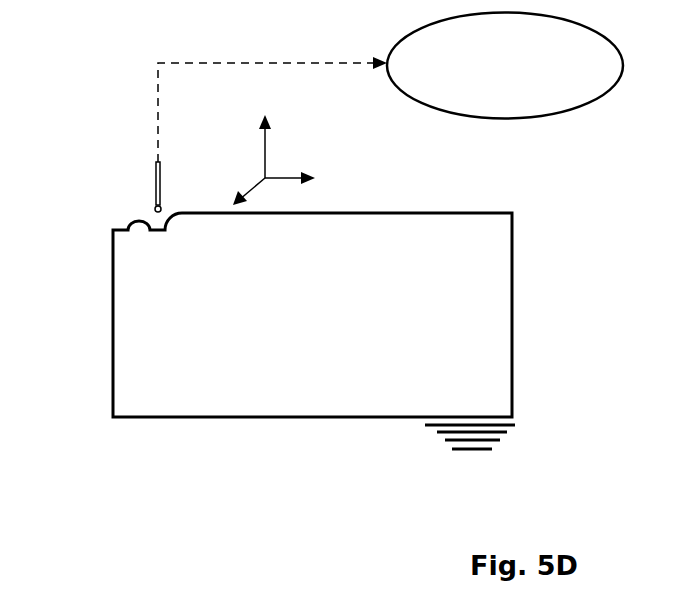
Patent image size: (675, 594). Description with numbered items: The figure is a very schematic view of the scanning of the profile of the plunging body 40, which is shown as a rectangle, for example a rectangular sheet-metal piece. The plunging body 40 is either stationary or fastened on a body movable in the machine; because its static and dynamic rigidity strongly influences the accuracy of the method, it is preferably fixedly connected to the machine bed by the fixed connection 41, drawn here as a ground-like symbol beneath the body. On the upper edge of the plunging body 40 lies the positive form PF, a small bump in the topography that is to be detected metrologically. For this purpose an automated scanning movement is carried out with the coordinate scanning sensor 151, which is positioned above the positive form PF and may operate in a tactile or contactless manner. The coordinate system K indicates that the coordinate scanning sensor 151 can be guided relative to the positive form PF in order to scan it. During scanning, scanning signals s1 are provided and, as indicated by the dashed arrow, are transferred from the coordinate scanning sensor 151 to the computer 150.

The plunging body 40 is at (432, 282).
The fixed connection 41 is at (400, 441).
The computer 150 is at (530, 72).
The coordinate scanning sensor 151 is at (160, 177).
The scanning signals s1 is at (272, 100).
The positive form PF is at (137, 205).
The coordinate system K is at (274, 160).